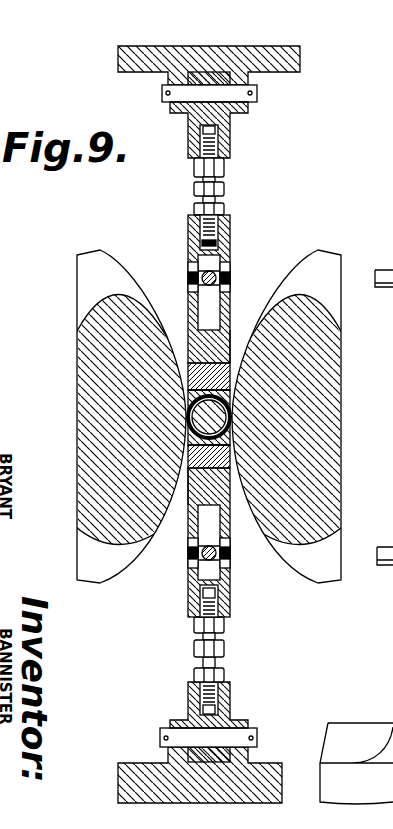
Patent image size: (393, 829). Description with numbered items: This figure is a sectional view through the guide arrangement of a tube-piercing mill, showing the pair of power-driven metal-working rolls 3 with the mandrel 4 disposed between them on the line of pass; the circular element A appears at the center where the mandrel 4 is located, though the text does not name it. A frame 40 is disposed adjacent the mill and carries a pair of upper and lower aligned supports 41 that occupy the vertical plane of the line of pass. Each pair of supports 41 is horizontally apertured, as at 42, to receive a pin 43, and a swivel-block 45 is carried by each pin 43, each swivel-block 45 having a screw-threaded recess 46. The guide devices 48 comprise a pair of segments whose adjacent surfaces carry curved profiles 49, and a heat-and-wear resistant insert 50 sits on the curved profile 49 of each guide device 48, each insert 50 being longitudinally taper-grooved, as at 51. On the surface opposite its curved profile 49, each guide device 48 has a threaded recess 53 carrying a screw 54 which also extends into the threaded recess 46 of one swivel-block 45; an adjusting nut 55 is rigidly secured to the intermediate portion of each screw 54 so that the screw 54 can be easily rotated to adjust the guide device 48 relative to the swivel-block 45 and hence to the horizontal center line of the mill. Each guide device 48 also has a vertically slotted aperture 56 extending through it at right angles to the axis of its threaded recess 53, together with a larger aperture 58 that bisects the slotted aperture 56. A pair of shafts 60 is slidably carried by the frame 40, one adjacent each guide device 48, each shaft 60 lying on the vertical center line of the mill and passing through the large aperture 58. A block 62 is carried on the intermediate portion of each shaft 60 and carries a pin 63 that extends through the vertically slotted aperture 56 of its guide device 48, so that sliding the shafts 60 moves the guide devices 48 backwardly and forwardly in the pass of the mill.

The metal-working rolls 3 is at (91, 255).
The mandrel 4 is at (200, 418).
The bearing ring A is at (188, 401).
The frame 40 is at (118, 59).
The supports 41 is at (240, 80).
The aperture 42 is at (207, 409).
The pin 43 is at (258, 93).
The swivel-block 45 is at (188, 137).
The screw-threaded recess 46 is at (232, 138).
The guide devices 48 is at (189, 222).
The curved profiles 49 is at (230, 346).
The heat-and-wear resistant insert 50 is at (200, 372).
The taper-groove 51 is at (229, 377).
The threaded recess 53 is at (231, 222).
The screw 54 is at (196, 174).
The adjusting nut 55 is at (222, 188).
The vertically slotted aperture 56 is at (189, 268).
The aperture 58 is at (202, 318).
The shaft 60 is at (222, 277).
The block 62 is at (226, 291).
The pin 63 is at (192, 278).